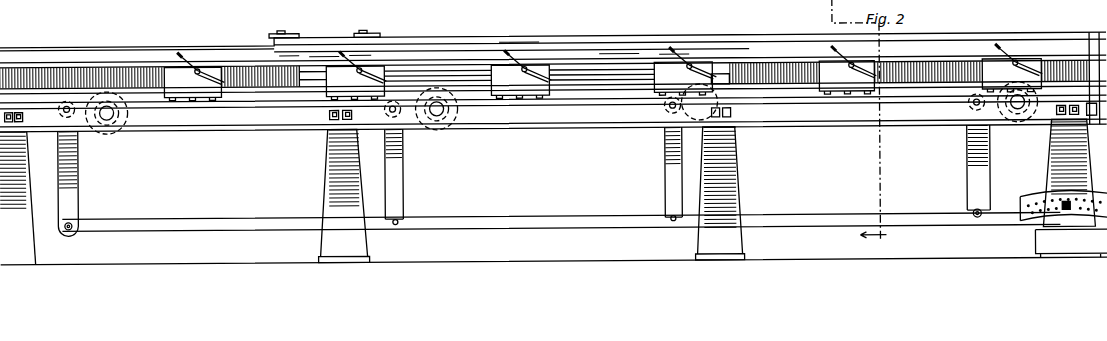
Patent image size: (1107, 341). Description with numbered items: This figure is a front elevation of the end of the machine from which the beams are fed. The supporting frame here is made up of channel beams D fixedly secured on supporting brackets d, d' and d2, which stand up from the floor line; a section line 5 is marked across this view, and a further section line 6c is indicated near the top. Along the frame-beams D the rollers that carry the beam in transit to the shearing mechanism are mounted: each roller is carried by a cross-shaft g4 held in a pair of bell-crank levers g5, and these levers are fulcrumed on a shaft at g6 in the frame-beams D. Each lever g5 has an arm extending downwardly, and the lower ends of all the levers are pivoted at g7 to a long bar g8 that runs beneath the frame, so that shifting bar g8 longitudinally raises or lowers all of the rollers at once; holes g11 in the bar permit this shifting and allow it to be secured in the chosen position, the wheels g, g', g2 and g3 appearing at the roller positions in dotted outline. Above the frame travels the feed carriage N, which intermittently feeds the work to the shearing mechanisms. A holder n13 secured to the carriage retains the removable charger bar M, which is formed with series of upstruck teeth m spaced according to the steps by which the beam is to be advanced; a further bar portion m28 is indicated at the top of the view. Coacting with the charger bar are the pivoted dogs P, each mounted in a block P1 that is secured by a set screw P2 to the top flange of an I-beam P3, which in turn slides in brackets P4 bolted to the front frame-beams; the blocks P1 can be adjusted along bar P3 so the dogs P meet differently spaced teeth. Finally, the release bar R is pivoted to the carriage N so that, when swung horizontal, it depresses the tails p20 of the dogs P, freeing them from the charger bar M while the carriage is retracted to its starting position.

The pivoted dog P is at (380, 68).
The block P1 is at (338, 90).
The set screw P2 is at (338, 106).
The I-beam P3 is at (262, 118).
The bracket P4 is at (28, 133).
The dog tail p20 is at (690, 35).
The wheel g is at (106, 125).
The wheel g' is at (436, 126).
The wheel bracket g2 is at (728, 130).
The wheel g3 is at (1018, 125).
The cross-shaft g4 is at (483, 145).
The bell-crank lever g5 is at (80, 206).
The fulcrum shaft g6 is at (975, 107).
The pivot g7 is at (975, 213).
The bar g8 is at (505, 226).
The hole g11 is at (1100, 175).
The supporting bracket d is at (37, 197).
The supporting bracket d' is at (375, 248).
The supporting bracket d2 is at (735, 244).
The channel beam D is at (131, 80).
The upstruck tooth m is at (447, 76).
The bar part m28 is at (86, 8).
The charger bar M is at (552, 68).
The feed carriage N is at (312, 34).
The release bar R is at (593, 46).
The holder n13 is at (742, 62).
The part 6c is at (138, 10).
The section line 5 is at (873, 242).